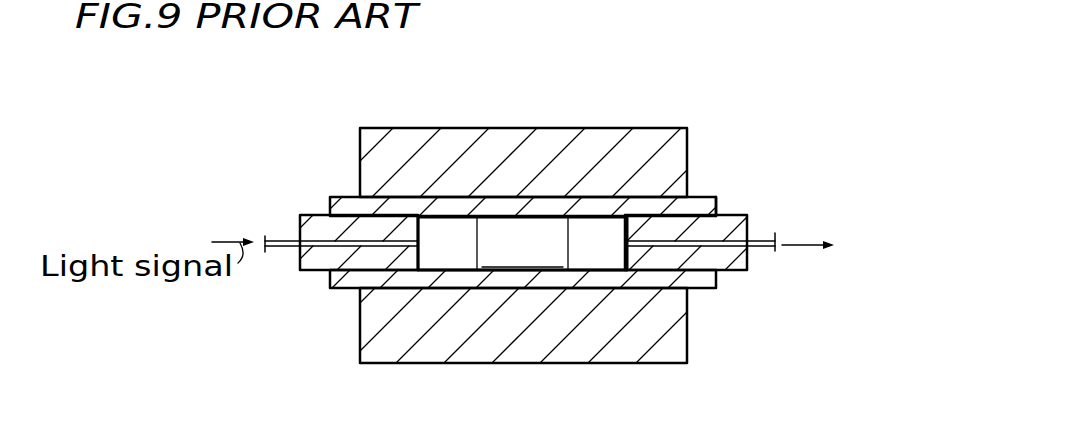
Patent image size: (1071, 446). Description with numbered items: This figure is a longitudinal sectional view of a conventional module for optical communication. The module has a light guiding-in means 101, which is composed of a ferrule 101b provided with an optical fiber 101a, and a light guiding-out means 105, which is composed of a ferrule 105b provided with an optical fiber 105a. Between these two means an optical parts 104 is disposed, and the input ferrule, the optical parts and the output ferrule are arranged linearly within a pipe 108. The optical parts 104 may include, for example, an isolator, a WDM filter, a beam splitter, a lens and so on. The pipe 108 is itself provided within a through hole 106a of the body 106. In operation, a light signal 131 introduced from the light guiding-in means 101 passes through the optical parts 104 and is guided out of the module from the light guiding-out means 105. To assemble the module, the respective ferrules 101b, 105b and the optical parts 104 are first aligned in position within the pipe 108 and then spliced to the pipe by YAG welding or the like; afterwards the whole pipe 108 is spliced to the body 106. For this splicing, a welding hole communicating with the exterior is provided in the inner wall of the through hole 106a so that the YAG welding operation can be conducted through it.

The light guiding-in means 101 is at (285, 300).
The optical fiber 101a is at (276, 250).
The ferrule 101b is at (343, 269).
The optical parts 104 is at (515, 225).
The light guiding-out means 105 is at (756, 296).
The optical fiber 105a is at (760, 249).
The ferrule 105b is at (704, 274).
The body 106 is at (617, 138).
The through hole 106a is at (398, 197).
The pipe 108 is at (690, 199).
The light signal 131 is at (237, 240).